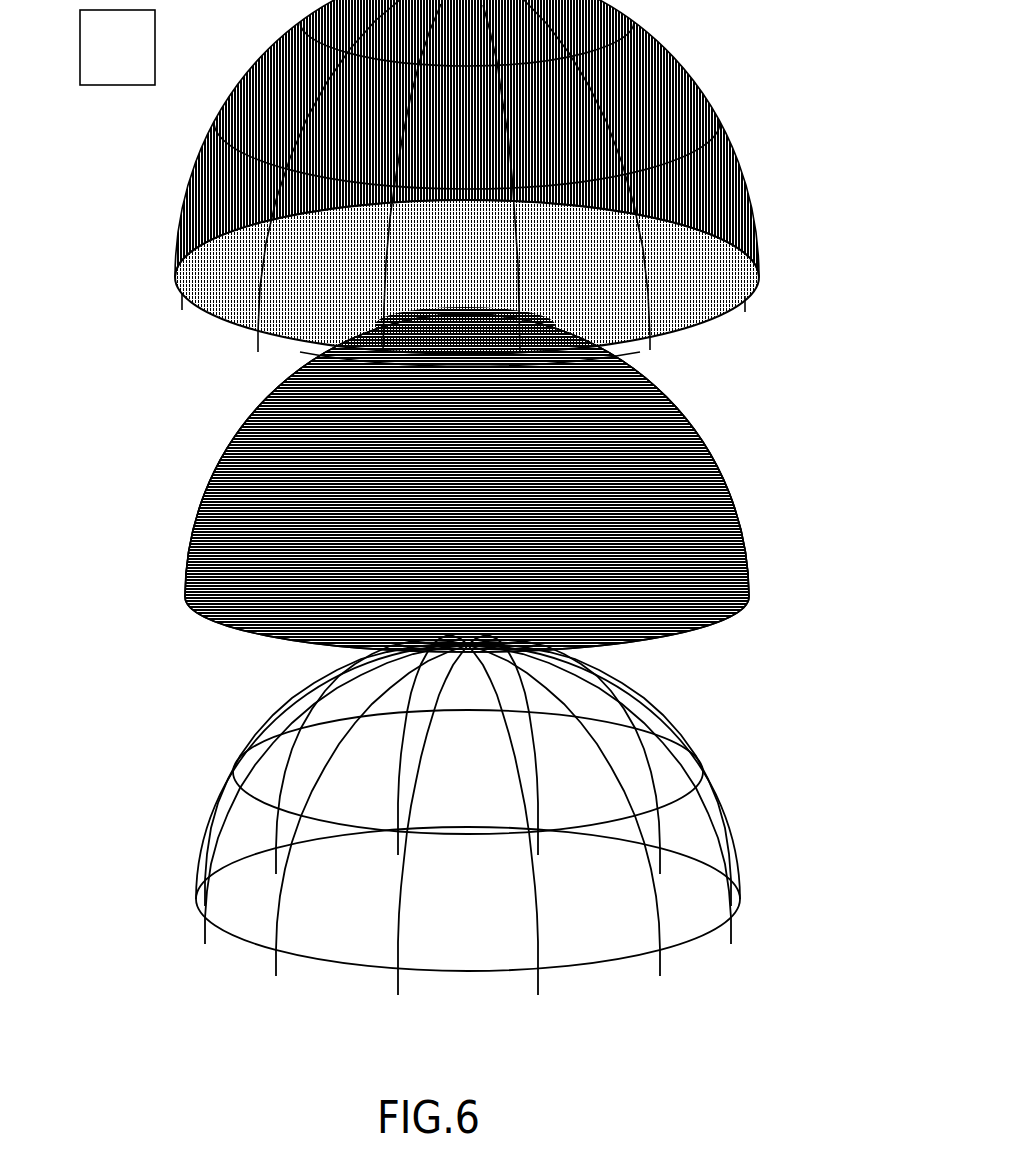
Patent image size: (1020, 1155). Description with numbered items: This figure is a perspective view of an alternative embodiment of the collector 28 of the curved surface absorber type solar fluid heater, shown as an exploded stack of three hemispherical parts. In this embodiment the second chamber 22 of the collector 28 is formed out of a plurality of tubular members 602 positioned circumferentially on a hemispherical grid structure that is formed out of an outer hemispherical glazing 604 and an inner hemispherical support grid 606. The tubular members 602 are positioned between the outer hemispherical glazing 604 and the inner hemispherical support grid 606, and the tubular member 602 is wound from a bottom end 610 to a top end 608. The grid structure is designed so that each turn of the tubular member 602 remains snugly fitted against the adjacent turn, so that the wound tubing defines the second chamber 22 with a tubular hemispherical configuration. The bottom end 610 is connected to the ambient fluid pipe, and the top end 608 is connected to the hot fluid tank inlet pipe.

The second chamber 22 is at (762, 473).
The collector 28 is at (117, 47).
The tubular members 602 is at (218, 483).
The outer hemispherical glazing 604 is at (190, 219).
The inner hemispherical support grid 606 is at (200, 815).
The top end 608 is at (455, 321).
The bottom end 610 is at (185, 590).